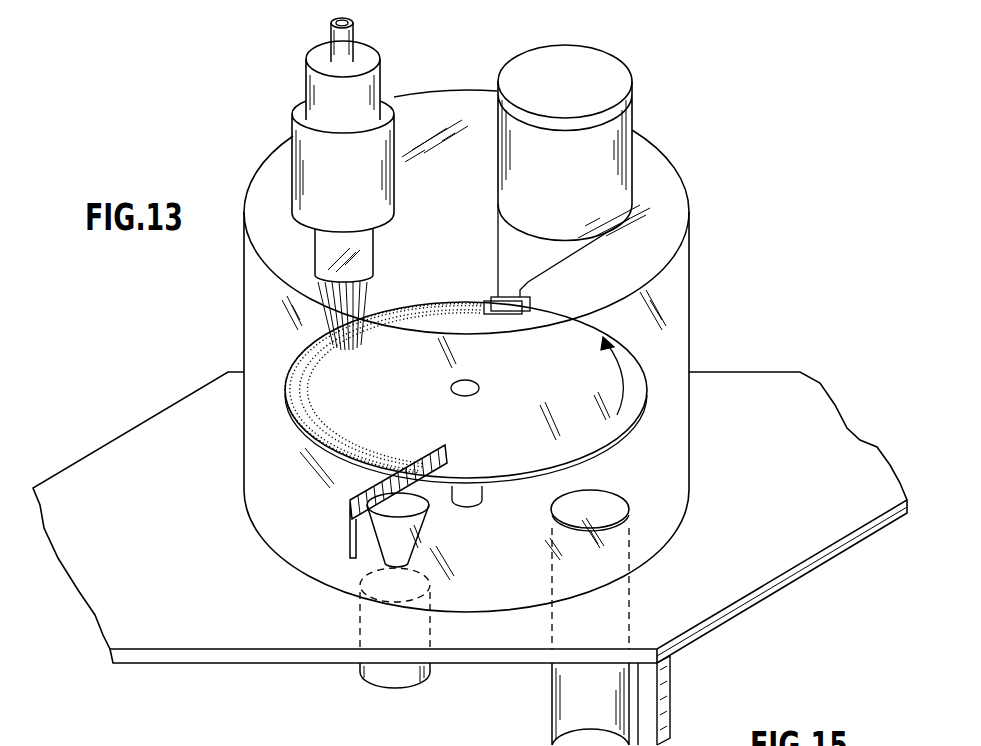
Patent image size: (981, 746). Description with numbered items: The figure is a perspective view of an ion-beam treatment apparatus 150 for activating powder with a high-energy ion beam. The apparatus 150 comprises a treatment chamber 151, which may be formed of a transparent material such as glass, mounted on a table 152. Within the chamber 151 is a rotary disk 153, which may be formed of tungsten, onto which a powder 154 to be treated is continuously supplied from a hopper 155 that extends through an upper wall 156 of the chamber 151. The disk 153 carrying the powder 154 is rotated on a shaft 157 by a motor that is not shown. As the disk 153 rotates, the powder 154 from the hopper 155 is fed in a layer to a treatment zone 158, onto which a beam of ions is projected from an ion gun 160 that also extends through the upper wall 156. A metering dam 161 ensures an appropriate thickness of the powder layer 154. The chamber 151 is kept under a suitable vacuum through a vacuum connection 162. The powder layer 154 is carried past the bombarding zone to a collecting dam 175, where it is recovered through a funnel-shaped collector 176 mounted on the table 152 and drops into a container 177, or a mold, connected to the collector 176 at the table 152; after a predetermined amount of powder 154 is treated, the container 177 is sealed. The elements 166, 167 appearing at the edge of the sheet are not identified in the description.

In FIG. 13, the apparatus 150 is at (706, 311).
In FIG. 13, the treatment chamber 151 is at (680, 413).
In FIG. 13, the table 152 is at (780, 517).
In FIG. 13, the rotary disk 153 is at (578, 383).
In FIG. 13, the powder 154 is at (312, 400).
In FIG. 13, the hopper 155 is at (585, 209).
In FIG. 13, the upper wall 156 is at (667, 183).
In FIG. 13, the shaft 157 is at (477, 493).
In FIG. 13, the treatment zone 158 is at (352, 345).
In FIG. 13, the ion gun 160 is at (280, 117).
In FIG. 13, the metering dam 161 is at (531, 259).
In FIG. 13, the vacuum connection 162 is at (568, 677).
In FIG. 15, the element 166 is at (183, 745).
In FIG. 15, the element 167 is at (251, 737).
In FIG. 13, the collecting dam 175 is at (445, 447).
In FIG. 13, the funnel-shaped collector 176 is at (417, 523).
In FIG. 13, the container 177 is at (372, 668).